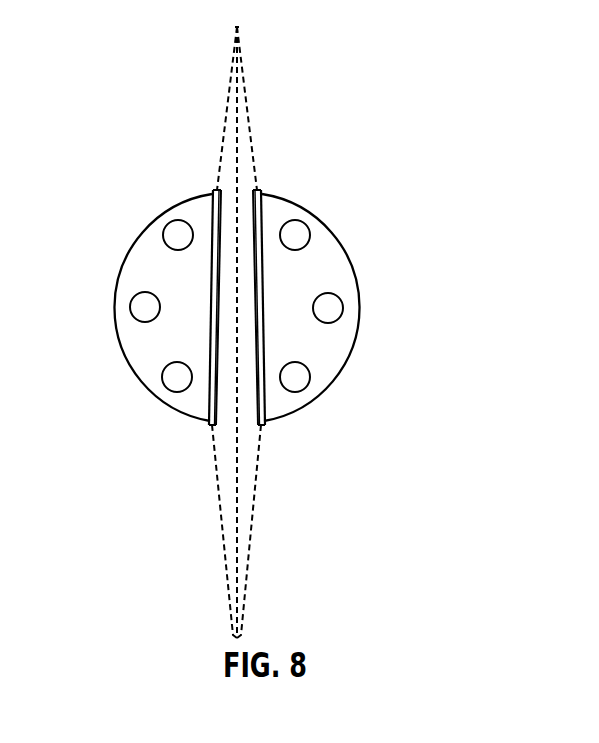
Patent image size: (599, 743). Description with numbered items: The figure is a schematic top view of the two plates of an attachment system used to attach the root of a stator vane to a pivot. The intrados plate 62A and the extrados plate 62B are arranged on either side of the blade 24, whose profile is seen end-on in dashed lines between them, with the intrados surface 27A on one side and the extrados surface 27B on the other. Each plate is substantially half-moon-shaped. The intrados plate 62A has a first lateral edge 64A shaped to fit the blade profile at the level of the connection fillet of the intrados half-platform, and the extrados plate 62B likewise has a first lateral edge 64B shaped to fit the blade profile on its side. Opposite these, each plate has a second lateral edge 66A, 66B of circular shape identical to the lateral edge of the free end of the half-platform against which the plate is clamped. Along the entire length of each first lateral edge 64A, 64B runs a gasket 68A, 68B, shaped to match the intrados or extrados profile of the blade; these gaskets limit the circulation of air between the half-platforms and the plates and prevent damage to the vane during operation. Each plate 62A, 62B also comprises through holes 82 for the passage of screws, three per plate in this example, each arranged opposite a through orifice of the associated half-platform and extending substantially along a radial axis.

The blade 24 is at (238, 108).
The intrados surface 27A is at (202, 560).
The extrados surface 27B is at (264, 540).
The intrados plate 62A is at (129, 300).
The extrados plate 62B is at (349, 292).
The first lateral edge 64A is at (165, 298).
The first lateral edge 64B is at (312, 297).
The second lateral edge 66A is at (139, 215).
The second lateral edge 66B is at (335, 211).
The gasket 68A is at (197, 414).
The gasket 68B is at (278, 410).
The through holes 82 is at (145, 306).